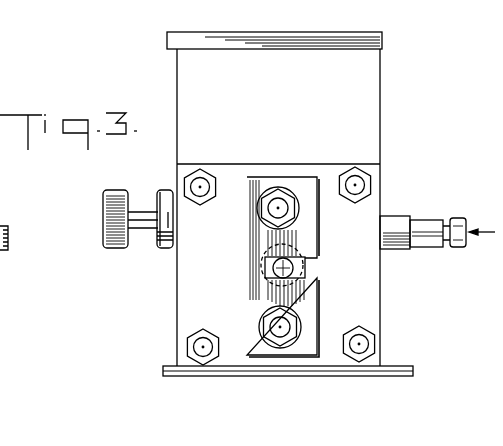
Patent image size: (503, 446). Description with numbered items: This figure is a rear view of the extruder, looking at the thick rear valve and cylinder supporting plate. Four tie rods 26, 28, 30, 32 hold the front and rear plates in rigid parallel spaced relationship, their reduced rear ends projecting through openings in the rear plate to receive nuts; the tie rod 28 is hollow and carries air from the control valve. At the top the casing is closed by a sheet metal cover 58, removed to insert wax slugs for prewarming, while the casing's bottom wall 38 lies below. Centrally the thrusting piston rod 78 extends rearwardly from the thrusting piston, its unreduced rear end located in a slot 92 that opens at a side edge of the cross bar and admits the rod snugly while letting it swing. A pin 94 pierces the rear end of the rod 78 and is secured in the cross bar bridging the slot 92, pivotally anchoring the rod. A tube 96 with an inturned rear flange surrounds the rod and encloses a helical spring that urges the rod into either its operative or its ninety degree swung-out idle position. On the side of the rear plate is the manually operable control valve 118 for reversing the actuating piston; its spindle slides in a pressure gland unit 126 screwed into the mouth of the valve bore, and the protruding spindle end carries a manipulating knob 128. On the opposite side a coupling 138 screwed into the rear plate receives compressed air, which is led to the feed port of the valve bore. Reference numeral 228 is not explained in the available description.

The sheet metal cover 58 is at (382, 34).
The tie rod 28 is at (205, 177).
The tie rod 26 is at (362, 170).
The tie rod 32 is at (200, 347).
The tie rod 30 is at (362, 345).
The pin 94 is at (266, 256).
The thrusting piston rod 78 is at (297, 258).
The slot 92 is at (305, 262).
The tube 96 is at (303, 270).
The manually operable control valve 118 is at (117, 238).
The manipulating knob 128 is at (119, 249).
The pressure gland unit 126 is at (163, 249).
The coupling 138 is at (433, 250).
The bottom wall 38 is at (9, 222).
The element 228 is at (16, 5).